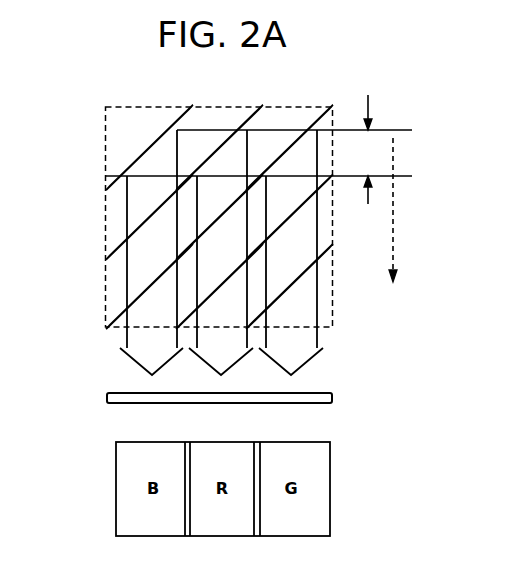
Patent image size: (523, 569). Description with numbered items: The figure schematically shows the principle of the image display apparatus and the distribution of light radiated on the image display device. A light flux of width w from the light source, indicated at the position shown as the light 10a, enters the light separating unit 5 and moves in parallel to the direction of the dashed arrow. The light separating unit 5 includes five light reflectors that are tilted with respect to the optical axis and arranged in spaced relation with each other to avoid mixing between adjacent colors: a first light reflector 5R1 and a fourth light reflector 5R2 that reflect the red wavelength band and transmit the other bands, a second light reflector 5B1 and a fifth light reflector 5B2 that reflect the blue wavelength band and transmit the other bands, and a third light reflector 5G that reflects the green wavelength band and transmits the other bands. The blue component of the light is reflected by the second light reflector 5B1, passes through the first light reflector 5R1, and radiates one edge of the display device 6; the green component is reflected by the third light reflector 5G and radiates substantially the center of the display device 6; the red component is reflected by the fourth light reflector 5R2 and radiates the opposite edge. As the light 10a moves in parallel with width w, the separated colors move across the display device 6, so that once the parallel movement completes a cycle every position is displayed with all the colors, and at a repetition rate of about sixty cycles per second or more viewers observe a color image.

The light separating unit 5 is at (283, 106).
The fifth light reflector 5B2 is at (118, 178).
The fourth light reflector 5R2 is at (118, 248).
The third light reflector 5G is at (118, 313).
The second light reflector 5B1 is at (318, 193).
The first light reflector 5R1 is at (318, 255).
The display device 6 is at (110, 397).
The light 10a is at (400, 136).
The width of light flux W is at (371, 138).